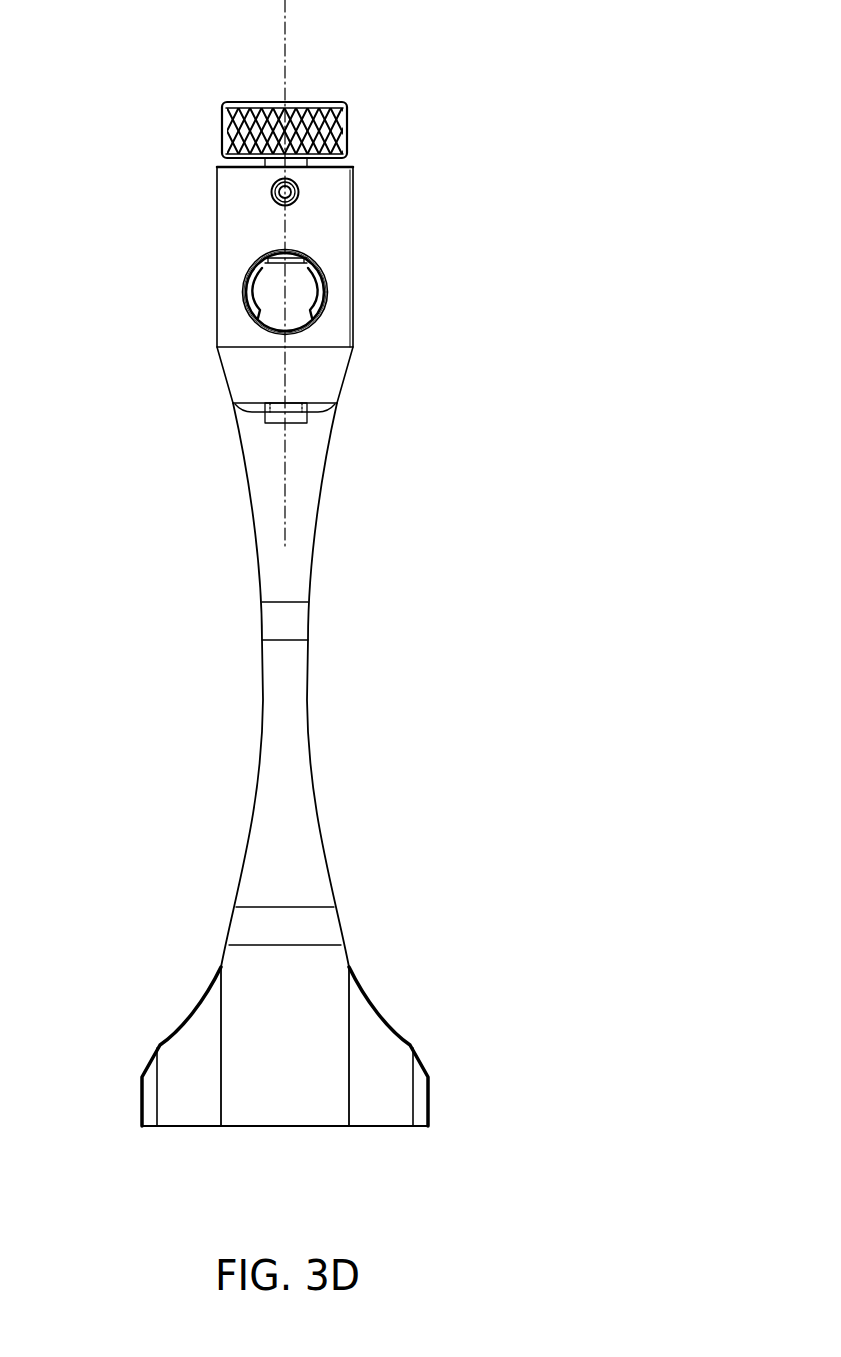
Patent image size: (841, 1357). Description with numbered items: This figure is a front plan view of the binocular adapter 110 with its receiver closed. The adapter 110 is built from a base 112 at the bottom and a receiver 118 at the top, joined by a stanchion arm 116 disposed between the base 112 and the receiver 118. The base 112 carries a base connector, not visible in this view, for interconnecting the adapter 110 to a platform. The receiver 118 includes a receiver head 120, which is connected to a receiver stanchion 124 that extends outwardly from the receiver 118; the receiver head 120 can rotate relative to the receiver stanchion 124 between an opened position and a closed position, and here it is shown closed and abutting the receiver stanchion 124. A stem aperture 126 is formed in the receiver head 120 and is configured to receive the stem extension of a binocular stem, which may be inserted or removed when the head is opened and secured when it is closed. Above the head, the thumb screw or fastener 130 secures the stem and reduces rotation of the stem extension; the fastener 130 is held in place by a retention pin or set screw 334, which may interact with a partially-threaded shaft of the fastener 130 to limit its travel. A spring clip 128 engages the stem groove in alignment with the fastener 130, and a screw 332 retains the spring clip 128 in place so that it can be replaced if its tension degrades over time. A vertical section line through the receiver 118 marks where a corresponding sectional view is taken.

The binocular adapter 110 is at (504, 39).
The base 112 is at (196, 1004).
The stanchion arm 116 is at (262, 707).
The receiver 118 is at (136, 262).
The receiver head 120 is at (353, 260).
The receiver stanchion 124 is at (345, 386).
The stem aperture 126 is at (328, 310).
The spring clip 128 is at (243, 296).
The thumb screw or fastener 130 is at (335, 103).
The screw 332 is at (263, 423).
The retention pin or set screw 334 is at (299, 192).